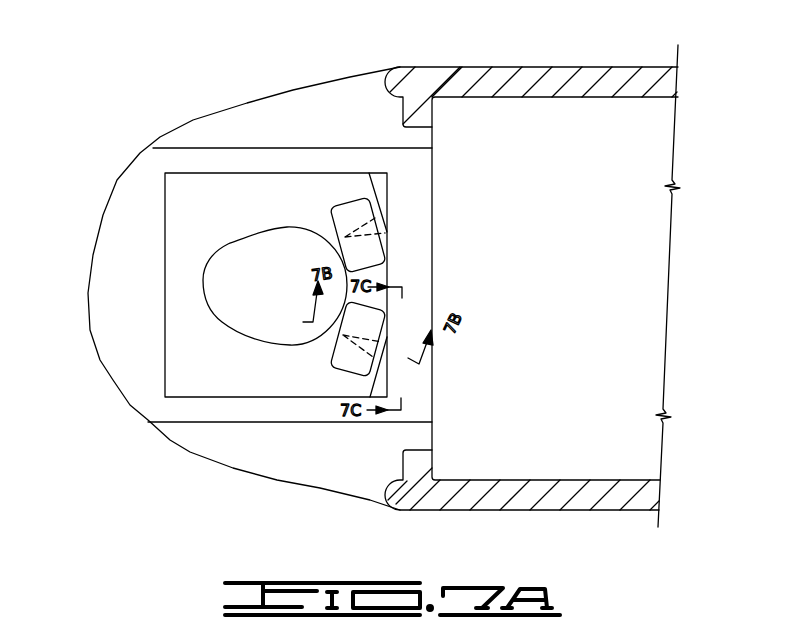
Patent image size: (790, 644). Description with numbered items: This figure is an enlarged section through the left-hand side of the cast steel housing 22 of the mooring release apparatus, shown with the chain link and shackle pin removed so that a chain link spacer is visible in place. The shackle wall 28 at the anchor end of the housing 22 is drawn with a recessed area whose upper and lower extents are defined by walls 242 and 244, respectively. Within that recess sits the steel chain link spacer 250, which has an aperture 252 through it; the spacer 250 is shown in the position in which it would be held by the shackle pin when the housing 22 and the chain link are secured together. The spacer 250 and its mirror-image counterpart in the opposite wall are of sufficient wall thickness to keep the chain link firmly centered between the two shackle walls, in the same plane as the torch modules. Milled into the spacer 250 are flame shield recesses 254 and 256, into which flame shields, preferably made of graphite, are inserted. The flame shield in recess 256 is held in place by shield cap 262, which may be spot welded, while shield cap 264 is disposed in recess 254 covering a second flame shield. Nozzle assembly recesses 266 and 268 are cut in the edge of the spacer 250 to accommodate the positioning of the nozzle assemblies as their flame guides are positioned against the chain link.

The housing 22 is at (493, 80).
The wall 28 is at (325, 117).
The wall 242 is at (217, 150).
The wall 244 is at (231, 422).
The chain link spacer 250 is at (185, 193).
The aperture 252 is at (240, 275).
The flame shield recess 254 is at (325, 218).
The flame shield recess 256 is at (333, 352).
The shield cap 262 is at (377, 322).
The shield cap 264 is at (360, 203).
The nozzle assembly recess 266 is at (382, 186).
The nozzle assembly recess 268 is at (378, 387).